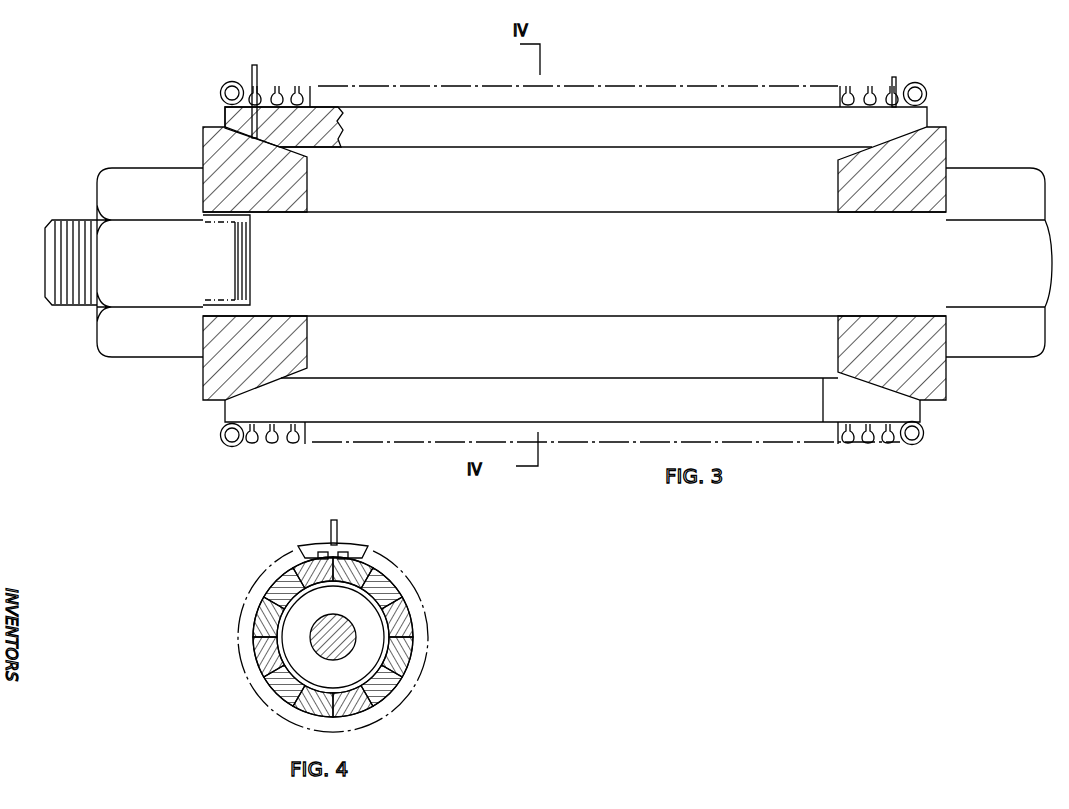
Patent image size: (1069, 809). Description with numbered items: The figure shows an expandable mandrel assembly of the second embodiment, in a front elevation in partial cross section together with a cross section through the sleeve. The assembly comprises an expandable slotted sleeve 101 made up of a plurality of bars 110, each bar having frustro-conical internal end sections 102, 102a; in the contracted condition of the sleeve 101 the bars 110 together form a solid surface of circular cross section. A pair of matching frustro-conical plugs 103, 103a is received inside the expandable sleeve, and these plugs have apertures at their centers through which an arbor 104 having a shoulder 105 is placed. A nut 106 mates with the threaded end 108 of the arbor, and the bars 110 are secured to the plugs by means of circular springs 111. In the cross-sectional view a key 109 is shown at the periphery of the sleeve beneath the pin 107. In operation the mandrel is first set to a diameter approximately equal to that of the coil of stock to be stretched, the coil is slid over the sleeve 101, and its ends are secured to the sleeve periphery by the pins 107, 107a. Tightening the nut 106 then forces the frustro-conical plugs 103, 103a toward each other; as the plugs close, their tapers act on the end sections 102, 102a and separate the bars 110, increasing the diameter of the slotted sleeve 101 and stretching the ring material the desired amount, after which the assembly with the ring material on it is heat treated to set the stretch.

In FIG. 3, the expandable slotted sleeve 101 is at (932, 111).
In FIG. 3, the frustro-conical internal end section 102 is at (222, 400).
In FIG. 3, the frustro-conical internal end section 102a is at (902, 140).
In FIG. 3, the frustro-conical plug 103 is at (307, 178).
In FIG. 4, the frustro-conical plug 103 is at (366, 612).
In FIG. 3, the frustro-conical plug 103a is at (838, 176).
In FIG. 3, the shaft 104 is at (566, 306).
In FIG. 4, the shaft 104 is at (358, 643).
In FIG. 3, the shoulder 105 is at (975, 350).
In FIG. 3, the nut 106 is at (128, 358).
In FIG. 3, the pin 107 is at (258, 70).
In FIG. 4, the pin 107 is at (340, 520).
In FIG. 3, the pin 107a is at (897, 78).
In FIG. 3, the threaded end 108 is at (75, 306).
In FIG. 3, the key 109 is at (302, 82).
In FIG. 4, the key 109 is at (360, 547).
In FIG. 3, the bar 110 is at (392, 138).
In FIG. 4, the bar 110 is at (385, 580).
In FIG. 3, the circular spring 111 is at (225, 443).